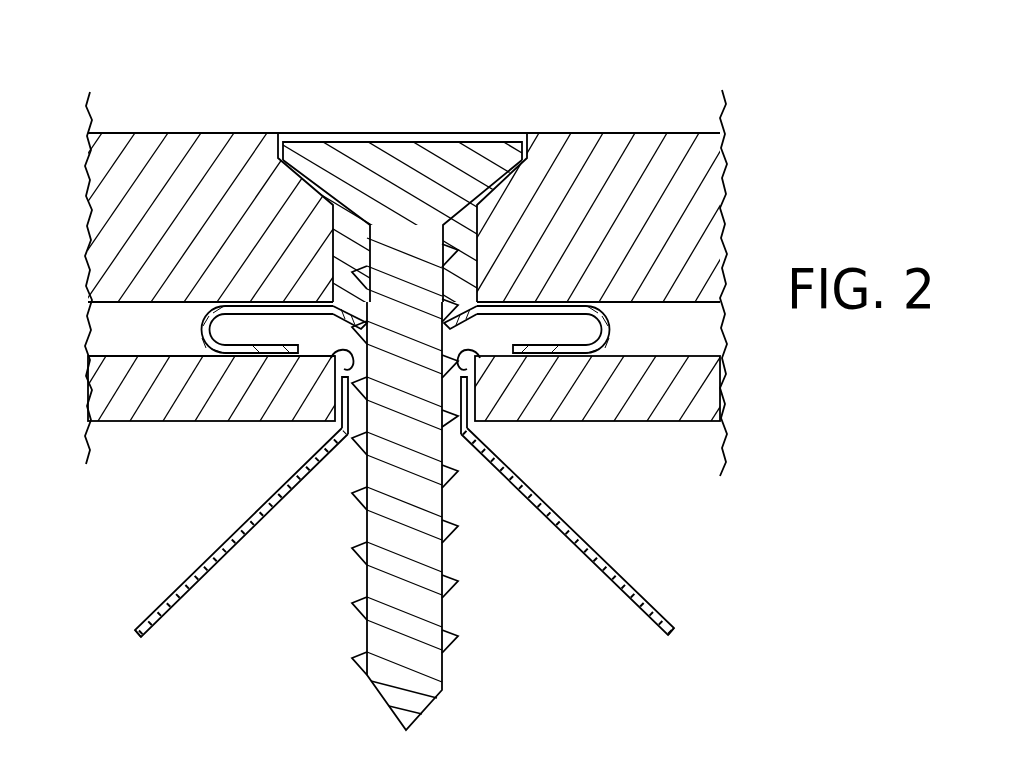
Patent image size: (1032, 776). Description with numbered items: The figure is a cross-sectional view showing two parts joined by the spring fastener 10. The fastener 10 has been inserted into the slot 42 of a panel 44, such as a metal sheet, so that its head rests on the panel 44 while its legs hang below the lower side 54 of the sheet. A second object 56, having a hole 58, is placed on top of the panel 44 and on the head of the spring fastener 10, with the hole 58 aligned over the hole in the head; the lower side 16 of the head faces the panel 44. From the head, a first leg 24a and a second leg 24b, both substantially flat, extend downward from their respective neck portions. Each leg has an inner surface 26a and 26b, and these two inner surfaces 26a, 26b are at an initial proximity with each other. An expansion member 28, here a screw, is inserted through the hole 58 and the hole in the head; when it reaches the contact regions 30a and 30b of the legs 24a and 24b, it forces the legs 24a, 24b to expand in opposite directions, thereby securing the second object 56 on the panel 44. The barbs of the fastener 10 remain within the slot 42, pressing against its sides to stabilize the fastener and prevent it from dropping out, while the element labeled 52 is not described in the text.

The spring fastener 10 is at (443, 463).
The lower side 16 is at (538, 340).
The first leg 24a is at (243, 522).
The second leg 24b is at (612, 552).
The inner surface 26a is at (229, 548).
The inner surface 26b is at (628, 603).
The expansion member 28 is at (393, 253).
The contact region 30a is at (347, 436).
The contact region 30b is at (462, 436).
The slot 42 is at (270, 423).
The panel 44 is at (150, 413).
The gap between panels 52 is at (127, 352).
The lower side 54 is at (563, 423).
The second object 56 is at (596, 138).
The hole 58 is at (461, 222).